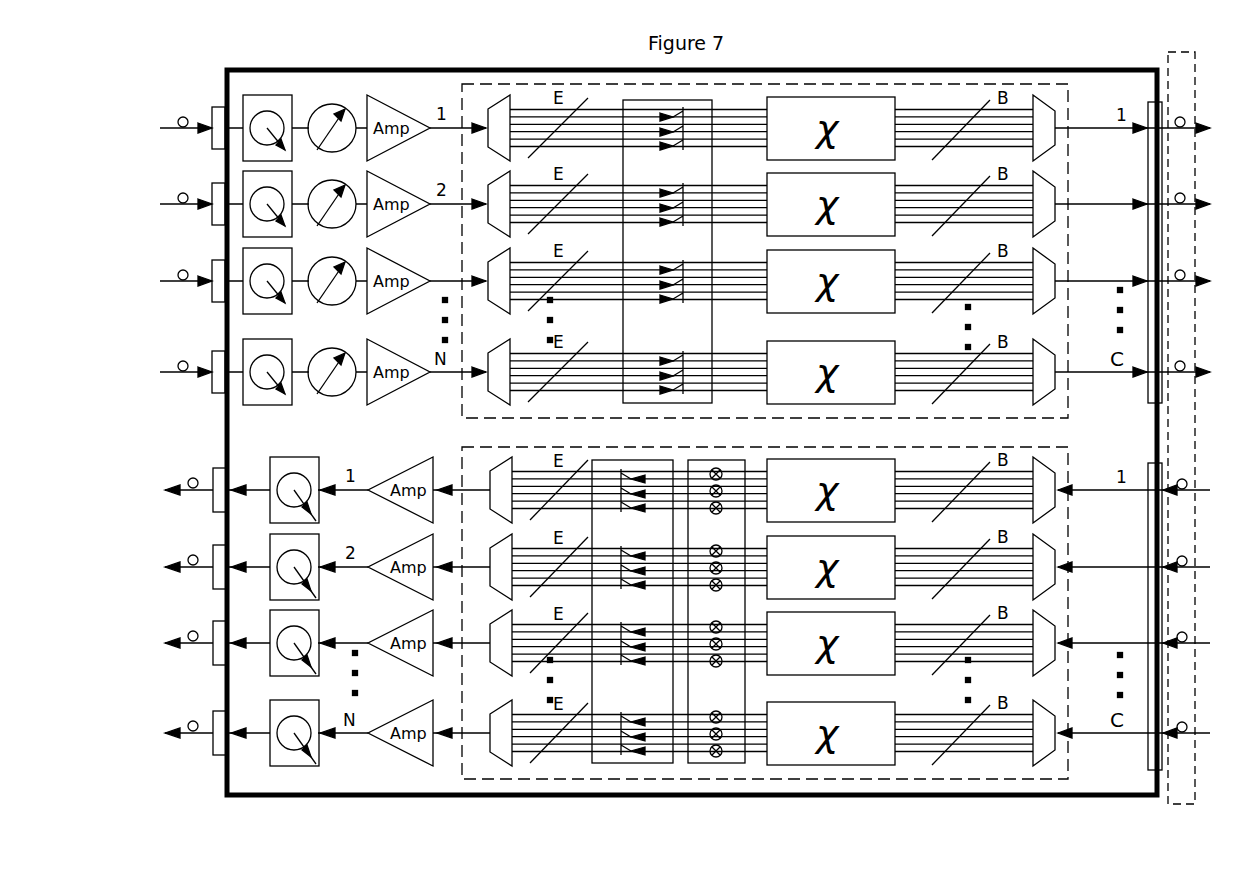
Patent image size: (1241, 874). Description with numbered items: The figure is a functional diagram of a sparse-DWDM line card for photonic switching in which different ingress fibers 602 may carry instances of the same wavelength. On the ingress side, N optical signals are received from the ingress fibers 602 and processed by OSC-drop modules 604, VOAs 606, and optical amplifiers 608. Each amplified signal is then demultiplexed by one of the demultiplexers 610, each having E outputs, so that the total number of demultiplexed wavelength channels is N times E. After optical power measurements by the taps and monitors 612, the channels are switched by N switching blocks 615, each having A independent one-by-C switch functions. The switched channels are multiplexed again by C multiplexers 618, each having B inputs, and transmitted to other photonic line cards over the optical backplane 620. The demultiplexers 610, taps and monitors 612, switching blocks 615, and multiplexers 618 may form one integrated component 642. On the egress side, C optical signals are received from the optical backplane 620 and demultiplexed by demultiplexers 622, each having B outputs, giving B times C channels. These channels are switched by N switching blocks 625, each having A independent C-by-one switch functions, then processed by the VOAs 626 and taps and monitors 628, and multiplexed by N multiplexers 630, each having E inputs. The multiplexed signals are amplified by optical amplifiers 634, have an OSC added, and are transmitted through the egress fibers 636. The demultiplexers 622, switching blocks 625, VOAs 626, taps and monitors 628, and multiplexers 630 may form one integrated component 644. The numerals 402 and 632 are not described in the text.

The ingress fibers 602 is at (192, 242).
The isolator 402 is at (351, 107).
The OSC-drop modules 604 is at (291, 313).
The VOAs 606 is at (345, 227).
The optical amplifiers 608 is at (407, 212).
The integrated component 642 is at (466, 92).
The demultiplexers 610 is at (497, 161).
The taps and monitors 612 is at (700, 312).
The switching blocks 615 is at (831, 251).
The multiplexers 618 is at (1040, 110).
The optical backplane 620 is at (1172, 66).
The integrated component 644 is at (498, 456).
The demultiplexers 622 is at (1048, 472).
The switching blocks 625 is at (831, 612).
The VOAs 626 is at (735, 763).
The taps and monitors 628 is at (660, 763).
The multiplexers 630 is at (503, 522).
The amplifiers 632 is at (399, 578).
The optical amplifiers 634 is at (318, 676).
The egress fibers 636 is at (196, 602).